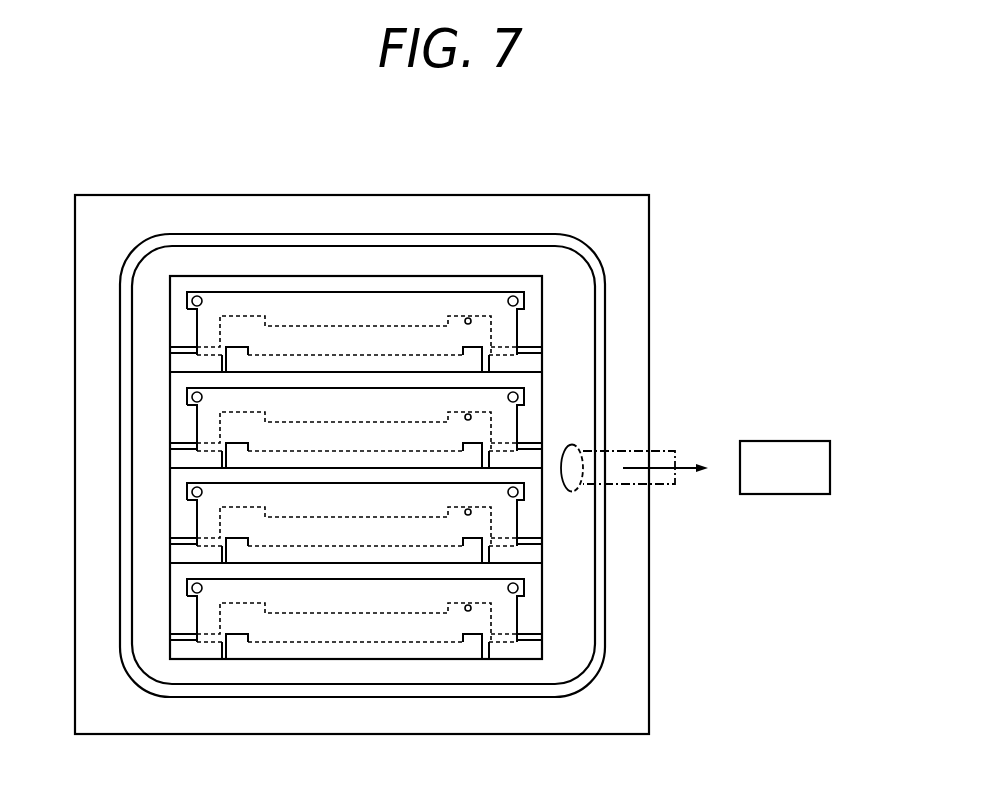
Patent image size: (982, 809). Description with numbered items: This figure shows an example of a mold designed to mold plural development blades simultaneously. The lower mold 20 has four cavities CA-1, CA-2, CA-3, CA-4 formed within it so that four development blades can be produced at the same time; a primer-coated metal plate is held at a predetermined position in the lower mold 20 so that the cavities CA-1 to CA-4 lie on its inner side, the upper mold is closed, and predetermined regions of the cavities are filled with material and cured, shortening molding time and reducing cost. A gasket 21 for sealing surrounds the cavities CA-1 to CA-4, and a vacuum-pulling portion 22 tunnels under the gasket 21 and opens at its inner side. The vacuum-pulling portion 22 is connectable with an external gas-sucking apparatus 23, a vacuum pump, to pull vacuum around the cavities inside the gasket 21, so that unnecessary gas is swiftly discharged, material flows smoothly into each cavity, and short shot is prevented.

The lower mold 20 is at (532, 196).
The gasket 21 is at (425, 242).
The vacuum-pulling portion 22 is at (628, 484).
The external gas-sucking apparatus 23 is at (817, 441).
The cavity CA-1 is at (490, 338).
The cavity CA-2 is at (490, 416).
The cavity CA-3 is at (490, 516).
The cavity CA-4 is at (490, 610).